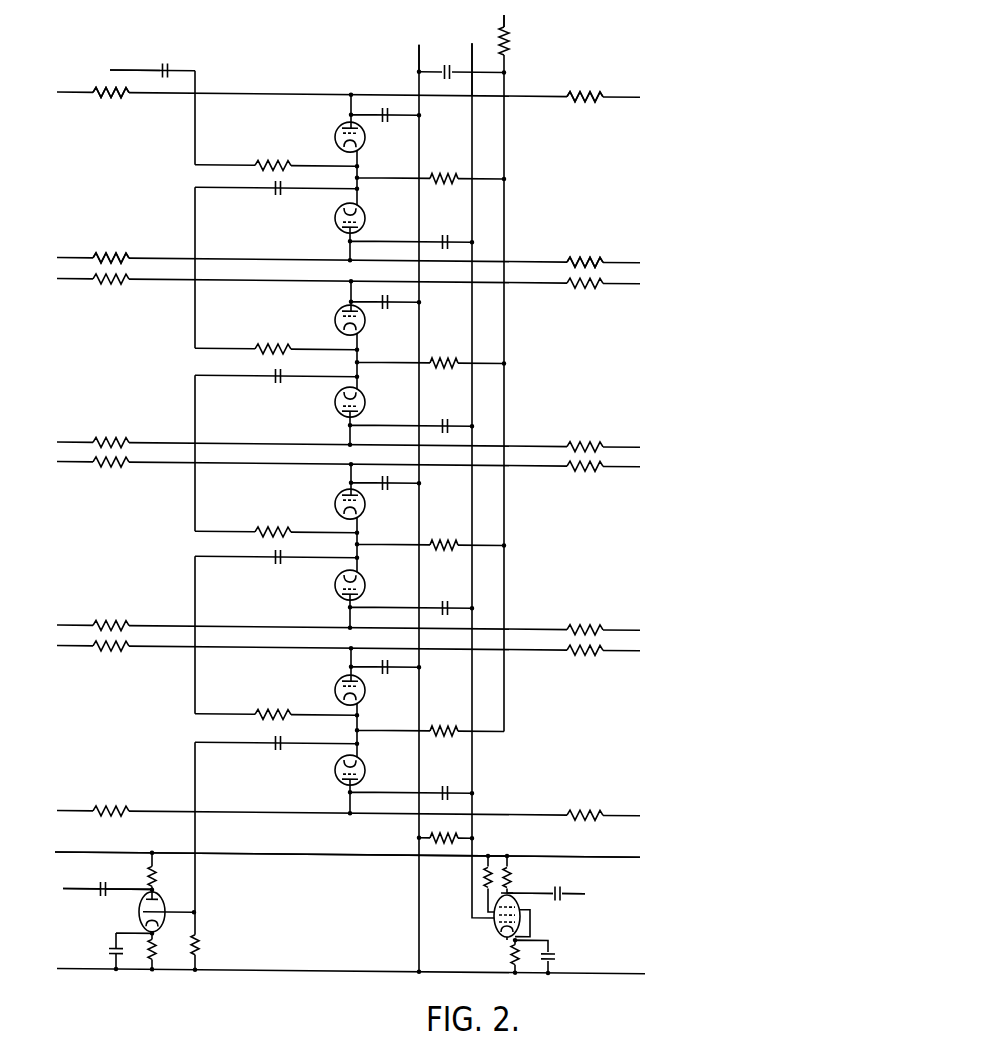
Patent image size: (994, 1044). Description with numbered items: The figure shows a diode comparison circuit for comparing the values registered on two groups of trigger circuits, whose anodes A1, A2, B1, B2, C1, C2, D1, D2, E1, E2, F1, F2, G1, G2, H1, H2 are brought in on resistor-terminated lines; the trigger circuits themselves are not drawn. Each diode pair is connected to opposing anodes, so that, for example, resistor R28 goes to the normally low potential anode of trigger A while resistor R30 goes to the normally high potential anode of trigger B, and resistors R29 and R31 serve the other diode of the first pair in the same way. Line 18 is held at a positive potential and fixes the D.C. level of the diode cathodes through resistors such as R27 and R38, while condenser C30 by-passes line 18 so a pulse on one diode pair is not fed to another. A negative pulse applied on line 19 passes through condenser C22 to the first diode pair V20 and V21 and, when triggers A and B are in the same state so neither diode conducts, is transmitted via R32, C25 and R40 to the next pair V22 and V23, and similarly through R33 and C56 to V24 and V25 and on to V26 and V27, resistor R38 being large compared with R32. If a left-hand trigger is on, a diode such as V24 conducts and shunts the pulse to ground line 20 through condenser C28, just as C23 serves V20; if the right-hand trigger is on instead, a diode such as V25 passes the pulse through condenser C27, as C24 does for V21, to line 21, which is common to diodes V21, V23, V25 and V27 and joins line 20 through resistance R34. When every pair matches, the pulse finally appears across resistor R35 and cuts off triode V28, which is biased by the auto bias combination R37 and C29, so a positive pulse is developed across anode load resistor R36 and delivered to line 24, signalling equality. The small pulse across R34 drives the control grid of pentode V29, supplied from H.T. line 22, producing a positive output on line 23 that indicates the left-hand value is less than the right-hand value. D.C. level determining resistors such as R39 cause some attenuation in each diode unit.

The line 18 is at (507, 19).
The line 19 is at (127, 67).
The ground line 20 is at (419, 66).
The line 21 is at (472, 78).
The H. T. line 22 is at (568, 852).
The line 23 is at (573, 888).
The line 24 is at (103, 881).
The resistor R27 is at (507, 45).
The resistor R28 is at (93, 94).
The resistor R29 is at (98, 257).
The resistor R30 is at (568, 97).
The resistor R31 is at (567, 255).
The resistor R32 is at (260, 156).
The resistor R33 is at (277, 520).
The resistance R34 is at (455, 831).
The resistor R35 is at (198, 934).
The anode load resistor R36 is at (156, 857).
The auto bias resistor R37 is at (153, 955).
The resistor R38 is at (442, 169).
The D. C. level determining resistor R39 is at (440, 536).
The resistor R40 is at (260, 342).
The condenser C22 is at (173, 61).
The condenser C23 is at (386, 119).
The condenser C24 is at (433, 214).
The condenser C25 is at (277, 193).
The condenser C27 is at (457, 578).
The condenser C28 is at (386, 487).
The auto bias condenser C29 is at (110, 953).
The condenser C30 is at (447, 60).
The condenser C56 is at (278, 562).
The diode V20 is at (336, 139).
The diode V21 is at (338, 226).
The diode V22 is at (338, 327).
The diode V23 is at (338, 390).
The diode V24 is at (338, 510).
The diode V25 is at (336, 587).
The diode V26 is at (337, 694).
The diode V27 is at (336, 772).
The triode V28 is at (139, 917).
The pentode V29 is at (530, 910).
The anode A1 is at (82, 91).
The anode A2 is at (82, 257).
The anode B1 is at (616, 262).
The anode B2 is at (616, 96).
The anode C1 is at (82, 278).
The anode C2 is at (82, 441).
The anode D1 is at (617, 446).
The anode D2 is at (617, 283).
The anode E1 is at (82, 461).
The anode E2 is at (82, 624).
The anode F1 is at (616, 629).
The anode F2 is at (616, 466).
The anode G1 is at (81, 645).
The anode G2 is at (81, 810).
The anode H1 is at (617, 815).
The anode H2 is at (617, 650).